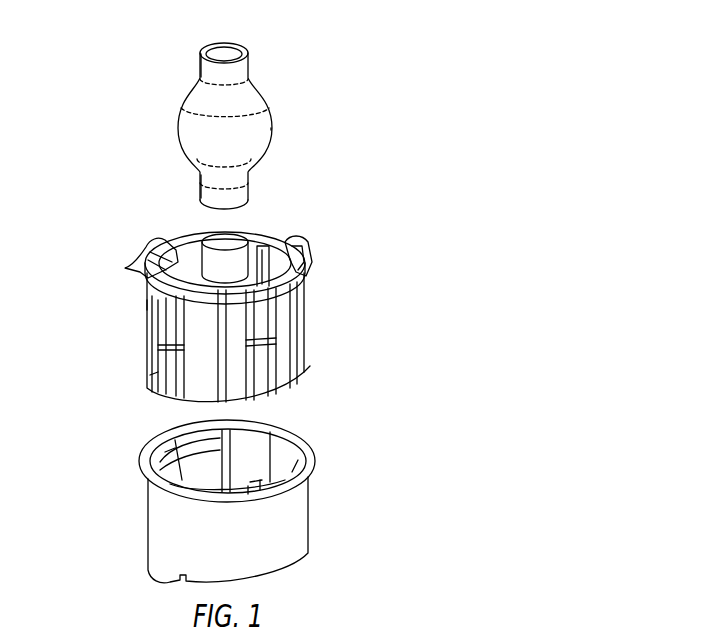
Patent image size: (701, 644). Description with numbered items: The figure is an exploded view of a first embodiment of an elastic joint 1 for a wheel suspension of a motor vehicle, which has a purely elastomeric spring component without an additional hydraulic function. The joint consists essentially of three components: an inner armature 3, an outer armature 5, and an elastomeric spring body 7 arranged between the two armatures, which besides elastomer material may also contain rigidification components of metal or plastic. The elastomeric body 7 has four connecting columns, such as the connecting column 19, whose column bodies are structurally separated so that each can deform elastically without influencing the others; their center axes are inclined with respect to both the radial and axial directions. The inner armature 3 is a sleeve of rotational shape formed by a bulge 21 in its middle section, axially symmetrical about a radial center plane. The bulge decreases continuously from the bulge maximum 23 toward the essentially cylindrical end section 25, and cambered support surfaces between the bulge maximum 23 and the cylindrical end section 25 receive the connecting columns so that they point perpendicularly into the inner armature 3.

The elastic joint 1 is at (33, 591).
The inner armature 3 is at (178, 111).
The outer armature 5 is at (311, 514).
The elastomeric spring body 7 is at (311, 355).
The connecting column 19 is at (125, 268).
The bulge 21 is at (268, 103).
The bulge maximum 23 is at (270, 133).
The cylindrical end section 25 is at (200, 193).